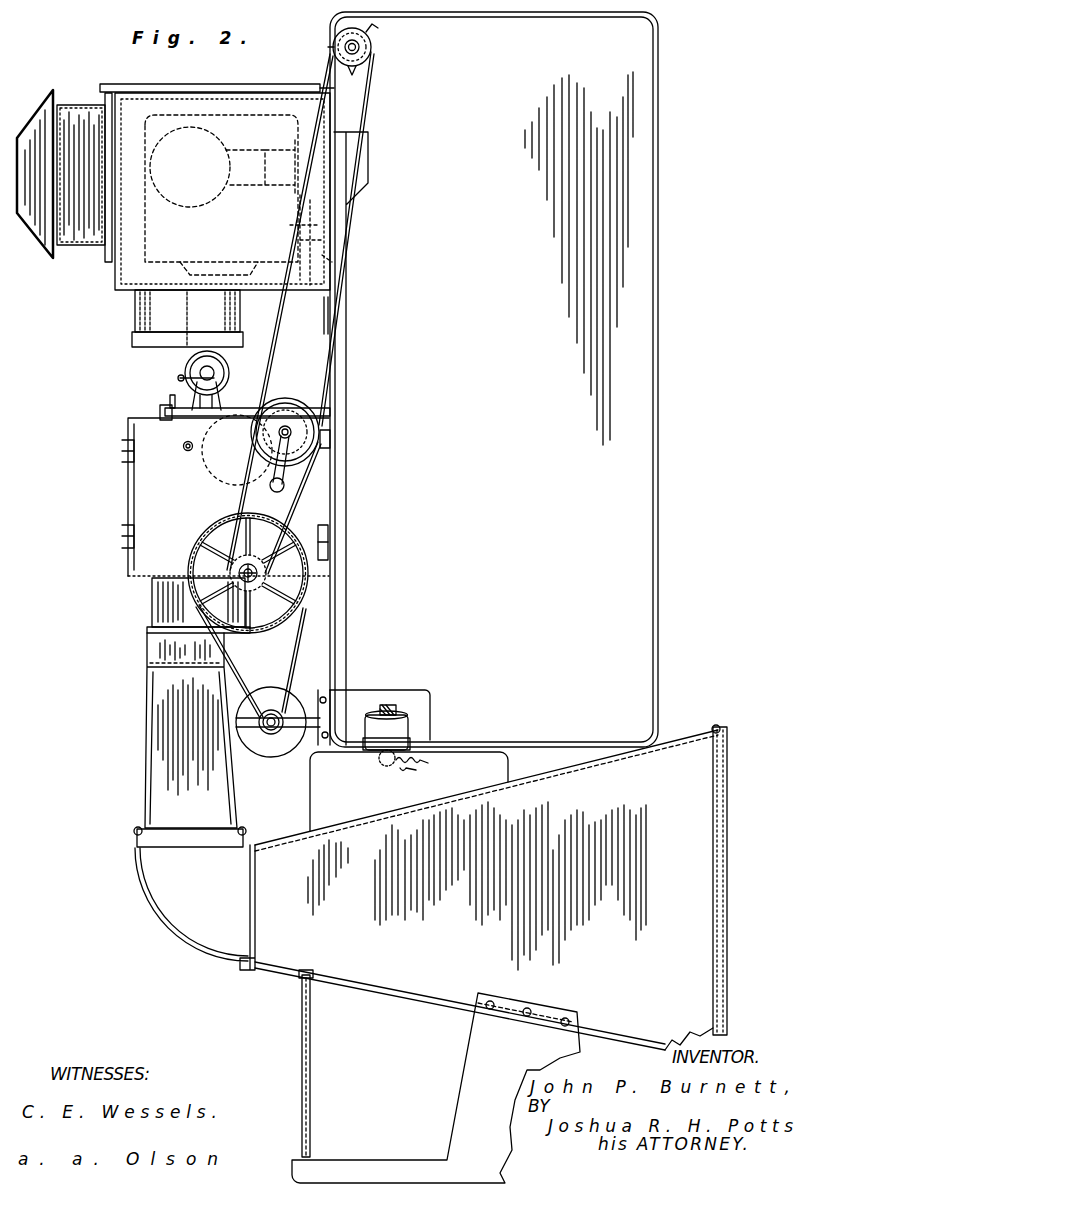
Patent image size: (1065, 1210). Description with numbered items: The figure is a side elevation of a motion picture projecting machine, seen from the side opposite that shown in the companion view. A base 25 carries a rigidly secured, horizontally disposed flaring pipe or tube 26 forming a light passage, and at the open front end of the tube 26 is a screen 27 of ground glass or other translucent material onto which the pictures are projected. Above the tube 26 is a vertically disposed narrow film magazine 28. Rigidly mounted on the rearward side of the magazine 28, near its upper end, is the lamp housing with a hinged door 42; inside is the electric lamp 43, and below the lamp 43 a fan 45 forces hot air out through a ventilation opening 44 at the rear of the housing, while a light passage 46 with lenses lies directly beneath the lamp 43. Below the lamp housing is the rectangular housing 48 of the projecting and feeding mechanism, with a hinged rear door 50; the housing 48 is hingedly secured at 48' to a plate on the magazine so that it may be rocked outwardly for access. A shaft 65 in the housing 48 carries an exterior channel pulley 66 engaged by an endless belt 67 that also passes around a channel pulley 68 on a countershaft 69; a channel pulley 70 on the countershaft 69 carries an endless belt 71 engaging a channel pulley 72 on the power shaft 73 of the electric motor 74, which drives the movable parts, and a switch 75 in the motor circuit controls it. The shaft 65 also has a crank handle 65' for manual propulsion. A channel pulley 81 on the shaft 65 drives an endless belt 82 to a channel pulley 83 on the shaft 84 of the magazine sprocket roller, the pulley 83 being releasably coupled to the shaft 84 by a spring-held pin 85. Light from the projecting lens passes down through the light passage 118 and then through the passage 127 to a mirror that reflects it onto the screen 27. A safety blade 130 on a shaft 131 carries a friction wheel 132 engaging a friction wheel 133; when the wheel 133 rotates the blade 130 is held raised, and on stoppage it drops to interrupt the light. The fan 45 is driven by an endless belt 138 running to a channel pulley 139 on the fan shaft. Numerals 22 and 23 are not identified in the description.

The plate 22 is at (168, 405).
The screw 23 is at (179, 434).
The base 25 is at (475, 1050).
The flaring pipe or tube 26 is at (486, 890).
The screen 27 is at (728, 909).
The film magazine 28 is at (494, 379).
The hinged door 42 is at (140, 268).
The electric lamp 43 is at (190, 120).
The ventilation opening 44 is at (79, 232).
The fan 45 is at (300, 272).
The light passage 46 is at (163, 313).
The rectangular housing 48 is at (228, 497).
The hinge 48' is at (351, 542).
The hinged rear door 50 is at (128, 493).
The shaft 65 is at (329, 424).
The crank handle 65' is at (273, 473).
The channel pulley 66 is at (322, 441).
The endless belt 67 is at (305, 495).
The channel pulley 68 is at (265, 580).
The countershaft 69 is at (232, 567).
The channel pulley 70 is at (270, 626).
The endless belt 71 is at (300, 650).
The channel pulley 72 is at (268, 735).
The power shaft 73 is at (272, 710).
The electric motor 74 is at (289, 752).
The switch 75 is at (392, 727).
The channel pulley 81 is at (292, 412).
The endless belt 82 is at (352, 233).
The channel pulley 83 is at (331, 45).
The shaft 84 is at (360, 48).
The pin 85 is at (376, 27).
The light passage 118 is at (152, 598).
The passage 127 is at (160, 750).
The blade 130 is at (178, 378).
The shaft 131 is at (196, 390).
The friction wheel 132 is at (222, 360).
The friction wheel 133 is at (237, 424).
The endless belt 138 is at (329, 321).
The channel pulley 139 is at (336, 260).